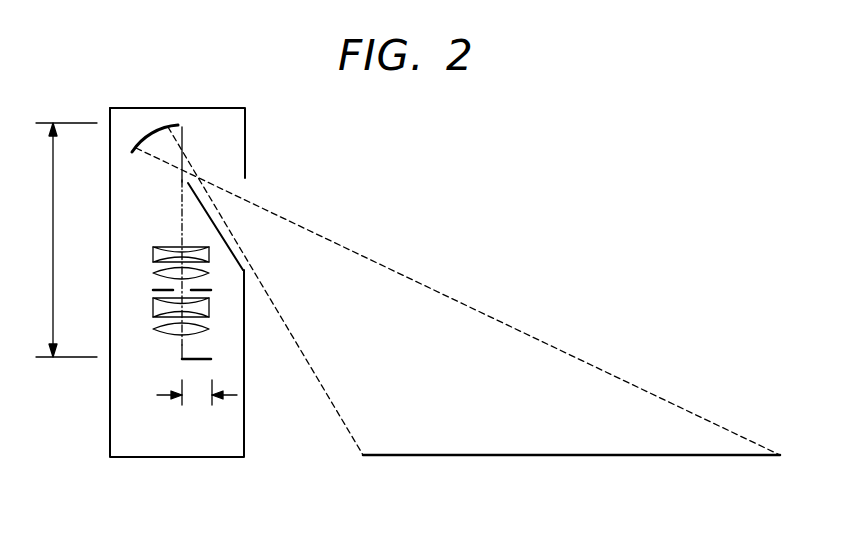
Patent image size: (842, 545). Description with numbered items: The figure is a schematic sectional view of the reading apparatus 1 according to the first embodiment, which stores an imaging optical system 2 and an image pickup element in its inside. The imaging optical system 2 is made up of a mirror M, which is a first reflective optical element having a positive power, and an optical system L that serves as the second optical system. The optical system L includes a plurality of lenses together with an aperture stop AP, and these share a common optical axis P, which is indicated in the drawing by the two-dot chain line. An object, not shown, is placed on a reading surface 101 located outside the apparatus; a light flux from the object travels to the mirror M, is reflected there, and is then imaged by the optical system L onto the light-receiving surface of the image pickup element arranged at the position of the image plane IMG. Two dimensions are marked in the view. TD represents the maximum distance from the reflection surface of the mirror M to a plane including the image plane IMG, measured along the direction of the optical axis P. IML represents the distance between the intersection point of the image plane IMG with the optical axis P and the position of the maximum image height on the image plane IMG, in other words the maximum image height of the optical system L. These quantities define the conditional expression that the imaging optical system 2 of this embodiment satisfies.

The reading apparatus 1 is at (245, 137).
The imaging optical system 2 is at (158, 209).
The mirror M is at (150, 140).
The optical axis P is at (183, 138).
The optical system L is at (148, 240).
The aperture stop AP is at (206, 284).
The image plane IMG is at (213, 348).
The maximum image height IML is at (197, 406).
The maximum distance TD is at (59, 240).
The reading surface 101 is at (543, 457).